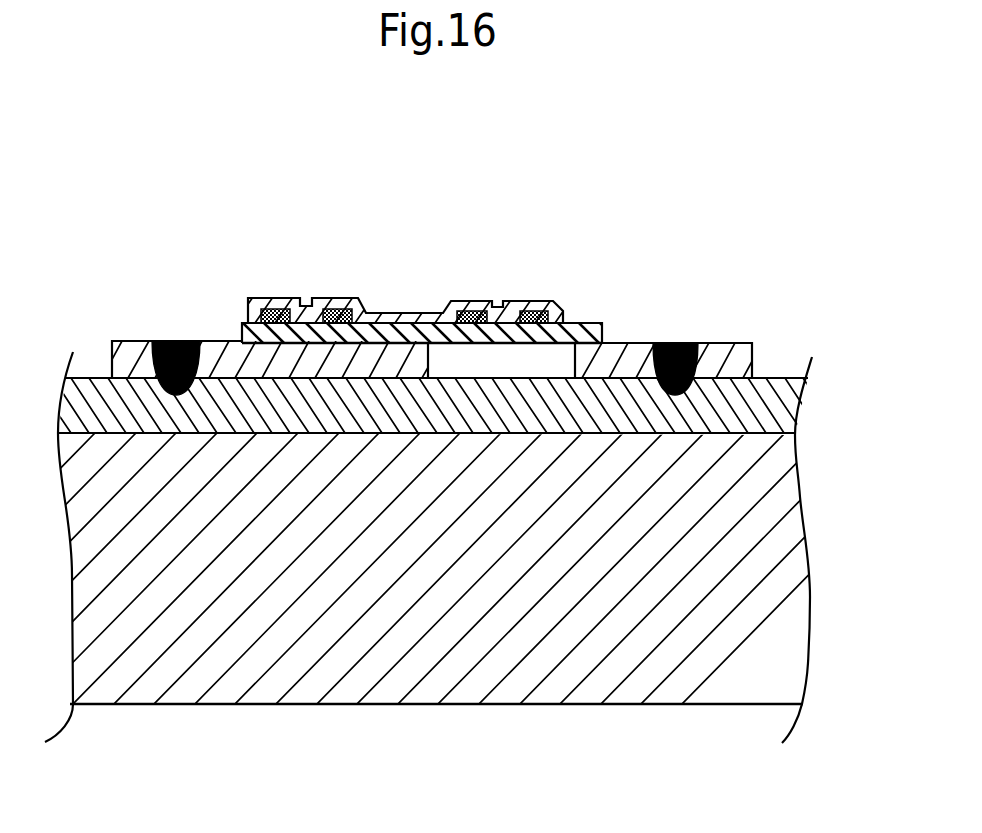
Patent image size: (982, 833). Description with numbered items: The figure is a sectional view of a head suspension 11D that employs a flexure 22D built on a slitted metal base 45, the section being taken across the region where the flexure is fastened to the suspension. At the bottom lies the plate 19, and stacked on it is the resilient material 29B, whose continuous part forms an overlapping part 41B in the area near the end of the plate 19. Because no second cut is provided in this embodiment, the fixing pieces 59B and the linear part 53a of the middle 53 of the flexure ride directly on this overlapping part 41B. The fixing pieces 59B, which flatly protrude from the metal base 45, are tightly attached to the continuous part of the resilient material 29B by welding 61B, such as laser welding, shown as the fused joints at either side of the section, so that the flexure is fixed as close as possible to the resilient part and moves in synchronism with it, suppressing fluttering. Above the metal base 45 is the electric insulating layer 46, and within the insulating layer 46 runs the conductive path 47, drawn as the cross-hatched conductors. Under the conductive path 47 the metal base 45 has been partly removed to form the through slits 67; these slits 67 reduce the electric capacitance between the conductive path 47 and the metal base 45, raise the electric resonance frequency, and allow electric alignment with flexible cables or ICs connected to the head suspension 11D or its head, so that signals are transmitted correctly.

The head suspension 11D is at (420, 241).
The plate 19 is at (401, 712).
The flexure 22D is at (439, 298).
The resilient material 29B is at (767, 378).
The overlapping part 41B is at (792, 376).
The metal base 45 is at (222, 333).
The electric insulating layer 46 is at (243, 330).
The conductive path 47 is at (478, 302).
The middle 53 is at (613, 342).
The linear part 53a is at (382, 346).
The fixing pieces 59B is at (108, 352).
The welding 61B is at (158, 339).
The slits 67 is at (412, 316).